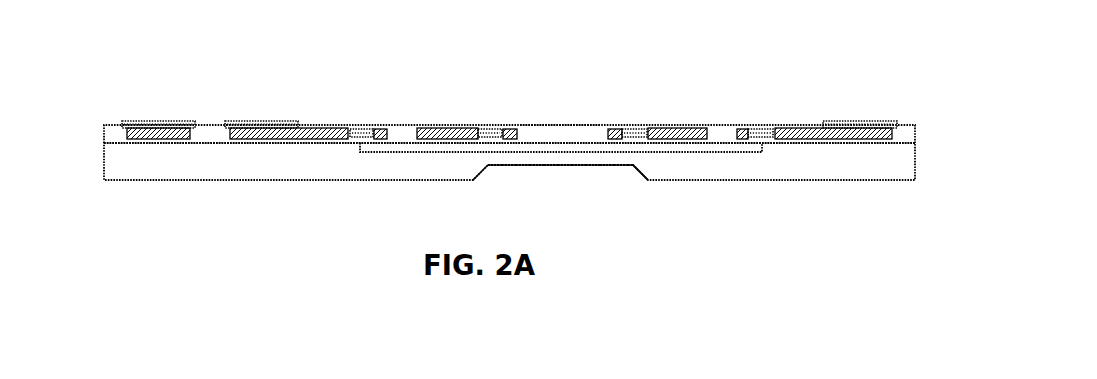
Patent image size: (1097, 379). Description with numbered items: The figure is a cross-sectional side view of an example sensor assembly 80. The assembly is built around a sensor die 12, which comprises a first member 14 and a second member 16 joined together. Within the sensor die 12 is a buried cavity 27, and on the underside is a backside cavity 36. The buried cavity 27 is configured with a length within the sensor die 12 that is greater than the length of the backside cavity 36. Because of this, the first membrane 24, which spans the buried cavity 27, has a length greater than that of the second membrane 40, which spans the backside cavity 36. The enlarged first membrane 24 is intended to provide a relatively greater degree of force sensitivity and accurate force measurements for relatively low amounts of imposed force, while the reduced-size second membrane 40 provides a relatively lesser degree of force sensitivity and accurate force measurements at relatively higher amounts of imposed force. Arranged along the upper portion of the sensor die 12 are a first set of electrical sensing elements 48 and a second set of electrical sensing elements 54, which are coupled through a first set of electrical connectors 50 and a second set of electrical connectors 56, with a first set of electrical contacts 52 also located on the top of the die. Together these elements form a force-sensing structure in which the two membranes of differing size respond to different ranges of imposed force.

The sensor assembly 80 is at (872, 40).
The sensor die 12 is at (916, 141).
The first member 14 is at (117, 133).
The second member 16 is at (115, 165).
The first membrane 24 is at (568, 127).
The buried cavity 27 is at (590, 150).
The backside cavity 36 is at (625, 177).
The second membrane 40 is at (556, 163).
The first set of electrical sensing elements 48 is at (360, 127).
The first set of electrical connectors 50 is at (307, 127).
The first set of electrical contacts 52 is at (252, 123).
The second set of electrical sensing elements 54 is at (492, 127).
The second set of electrical connectors 56 is at (448, 127).